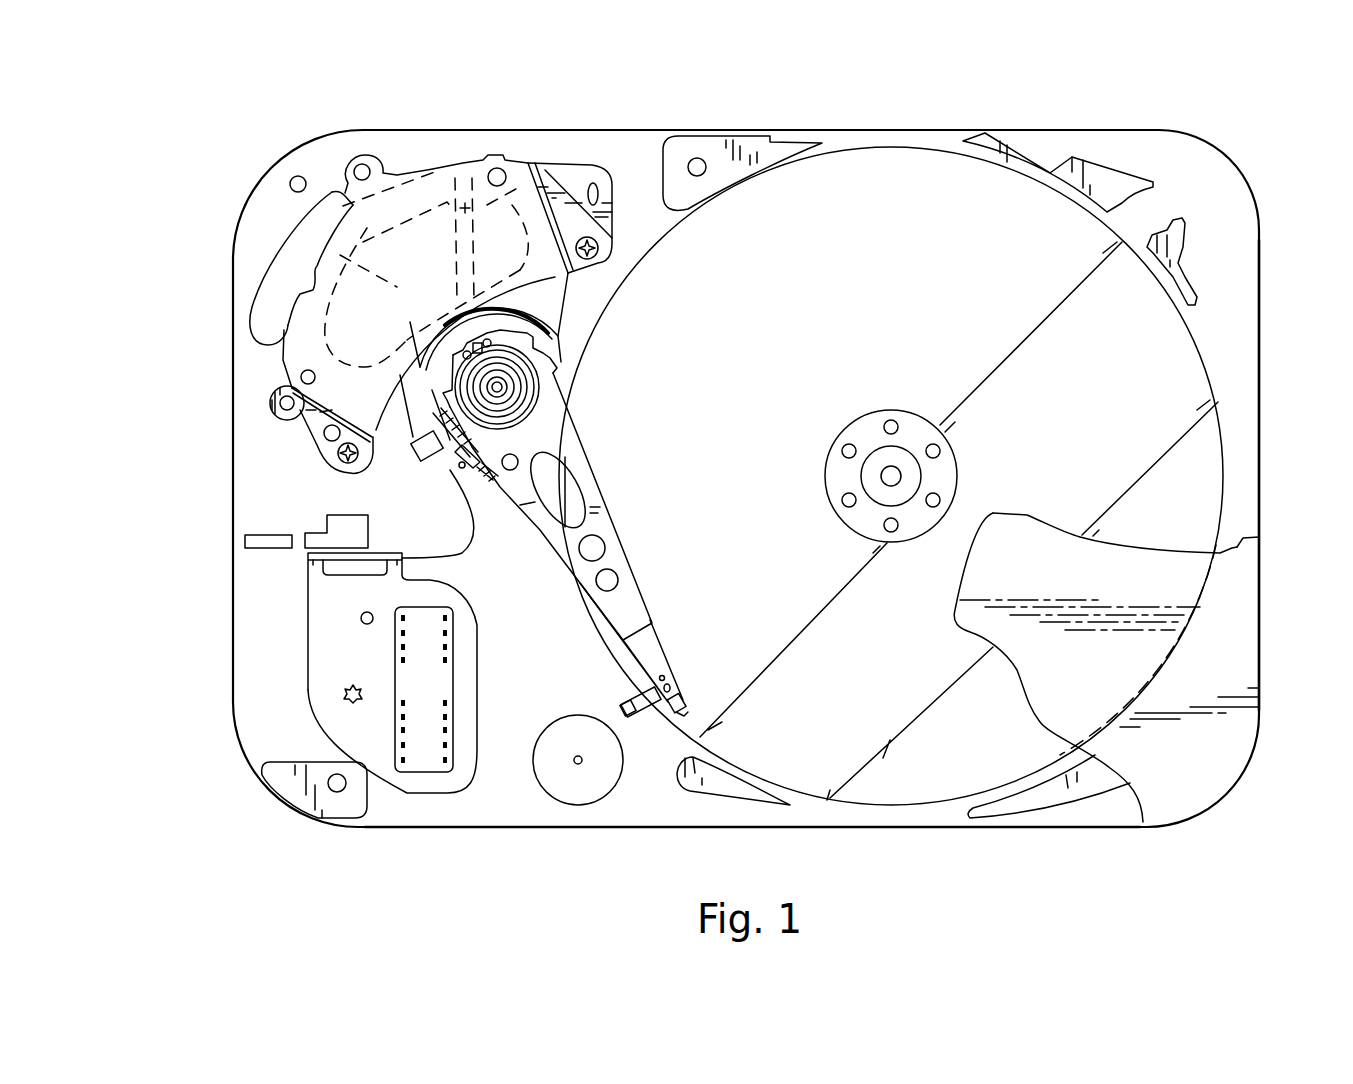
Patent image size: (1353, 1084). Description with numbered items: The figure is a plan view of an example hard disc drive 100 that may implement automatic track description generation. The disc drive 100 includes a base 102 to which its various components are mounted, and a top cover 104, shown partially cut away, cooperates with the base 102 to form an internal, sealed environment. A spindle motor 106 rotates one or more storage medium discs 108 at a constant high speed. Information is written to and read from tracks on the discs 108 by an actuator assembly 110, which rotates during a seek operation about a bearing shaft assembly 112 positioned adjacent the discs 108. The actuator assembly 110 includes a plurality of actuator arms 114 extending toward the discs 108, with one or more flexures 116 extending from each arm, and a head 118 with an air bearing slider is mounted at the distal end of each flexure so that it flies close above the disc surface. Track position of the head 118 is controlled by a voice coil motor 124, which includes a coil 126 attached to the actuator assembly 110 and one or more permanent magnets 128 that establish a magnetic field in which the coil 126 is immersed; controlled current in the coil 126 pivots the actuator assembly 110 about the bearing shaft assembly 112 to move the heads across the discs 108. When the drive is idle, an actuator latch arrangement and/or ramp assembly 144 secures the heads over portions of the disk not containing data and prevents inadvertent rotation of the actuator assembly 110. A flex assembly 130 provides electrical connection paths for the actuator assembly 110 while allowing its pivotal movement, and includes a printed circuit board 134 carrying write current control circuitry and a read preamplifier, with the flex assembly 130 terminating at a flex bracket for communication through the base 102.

The disc drive 100 is at (176, 196).
The base 102 is at (628, 160).
The top cover 104 is at (1227, 693).
The spindle motor 106 is at (893, 476).
The storage medium discs 108 is at (863, 205).
The actuator assembly 110 is at (598, 488).
The bearing shaft assembly 112 is at (498, 387).
The actuator arms 114 is at (617, 538).
The flexures 116 is at (662, 643).
The head 118 is at (692, 703).
The voice coil motor 124 is at (461, 168).
The coil 126 is at (375, 153).
The permanent magnets 128 is at (527, 167).
The flex assembly 130 is at (469, 546).
The printed circuit board 134 is at (328, 642).
The actuator latch arrangement and/or ramp assembly 144 is at (640, 714).